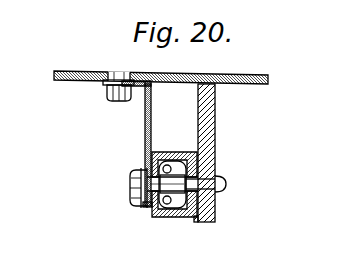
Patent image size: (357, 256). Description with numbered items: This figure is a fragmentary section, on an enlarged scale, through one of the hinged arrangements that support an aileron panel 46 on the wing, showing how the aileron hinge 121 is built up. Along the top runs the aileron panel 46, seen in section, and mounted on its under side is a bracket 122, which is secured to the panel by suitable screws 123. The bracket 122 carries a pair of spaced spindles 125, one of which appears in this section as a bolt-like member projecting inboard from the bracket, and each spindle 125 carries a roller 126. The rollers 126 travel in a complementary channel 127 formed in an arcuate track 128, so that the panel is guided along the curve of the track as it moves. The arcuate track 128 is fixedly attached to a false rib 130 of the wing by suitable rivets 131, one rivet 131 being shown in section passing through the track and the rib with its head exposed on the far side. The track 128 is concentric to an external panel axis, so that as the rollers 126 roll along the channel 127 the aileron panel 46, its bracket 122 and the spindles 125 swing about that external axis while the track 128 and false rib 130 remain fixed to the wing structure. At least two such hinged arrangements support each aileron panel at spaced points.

The aileron panel 46 is at (92, 72).
The aileron hinge 121 is at (105, 143).
The bracket 122 is at (147, 149).
The screws 123 is at (118, 101).
The spindles 125 is at (131, 190).
The rollers 126 is at (178, 209).
The channel 127 is at (146, 205).
The arcuate track 128 is at (163, 219).
The false rib 130 is at (217, 127).
The rivets 131 is at (225, 184).